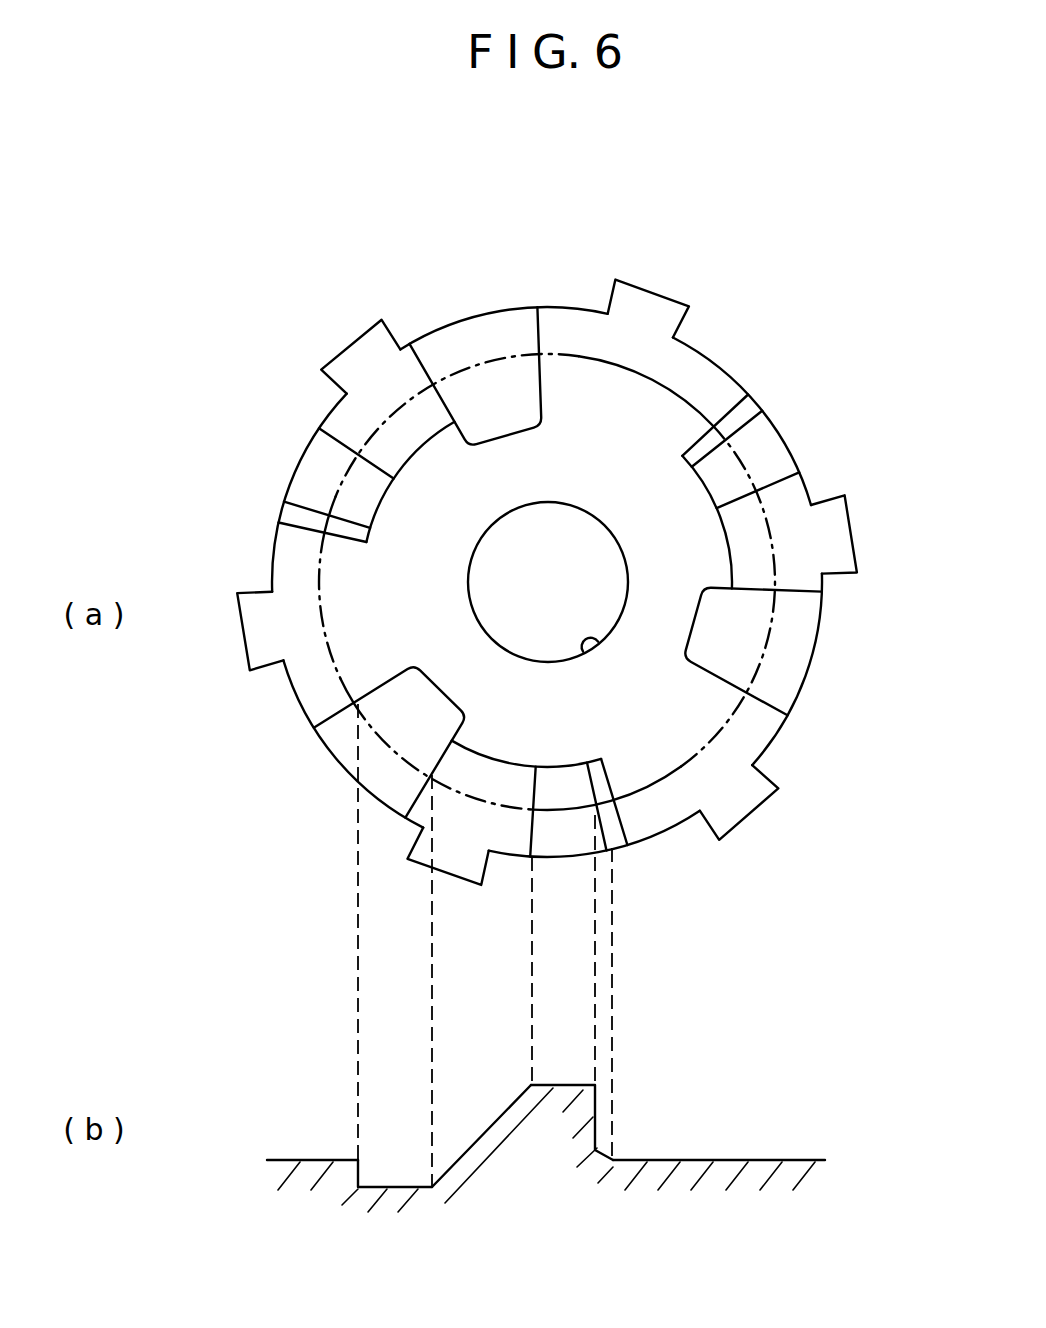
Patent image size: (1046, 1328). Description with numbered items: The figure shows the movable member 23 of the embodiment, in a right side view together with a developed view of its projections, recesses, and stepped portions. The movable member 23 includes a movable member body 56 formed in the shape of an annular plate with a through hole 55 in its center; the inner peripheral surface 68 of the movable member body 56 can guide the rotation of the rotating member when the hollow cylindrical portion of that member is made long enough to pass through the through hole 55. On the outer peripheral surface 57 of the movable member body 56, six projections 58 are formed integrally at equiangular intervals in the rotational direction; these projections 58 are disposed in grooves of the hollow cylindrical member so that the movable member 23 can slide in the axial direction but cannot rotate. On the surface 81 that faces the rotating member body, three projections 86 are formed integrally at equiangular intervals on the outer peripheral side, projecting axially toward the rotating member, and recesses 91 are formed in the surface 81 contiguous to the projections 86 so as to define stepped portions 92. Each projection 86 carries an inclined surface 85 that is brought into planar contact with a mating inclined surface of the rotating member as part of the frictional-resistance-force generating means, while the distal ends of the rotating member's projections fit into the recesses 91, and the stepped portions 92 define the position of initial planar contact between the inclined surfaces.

The movable member 23 is at (797, 377).
The through hole 55 is at (474, 611).
The movable member body 56 is at (585, 373).
The outer peripheral surface 57 is at (717, 363).
The projections 58 is at (650, 303).
The inner peripheral surface 68 is at (603, 645).
The surface 81 is at (317, 562).
The inclined surfaces 85 is at (400, 362).
The projections 86 is at (317, 458).
The recesses 91 is at (493, 338).
The stepped portions 92 is at (565, 327).